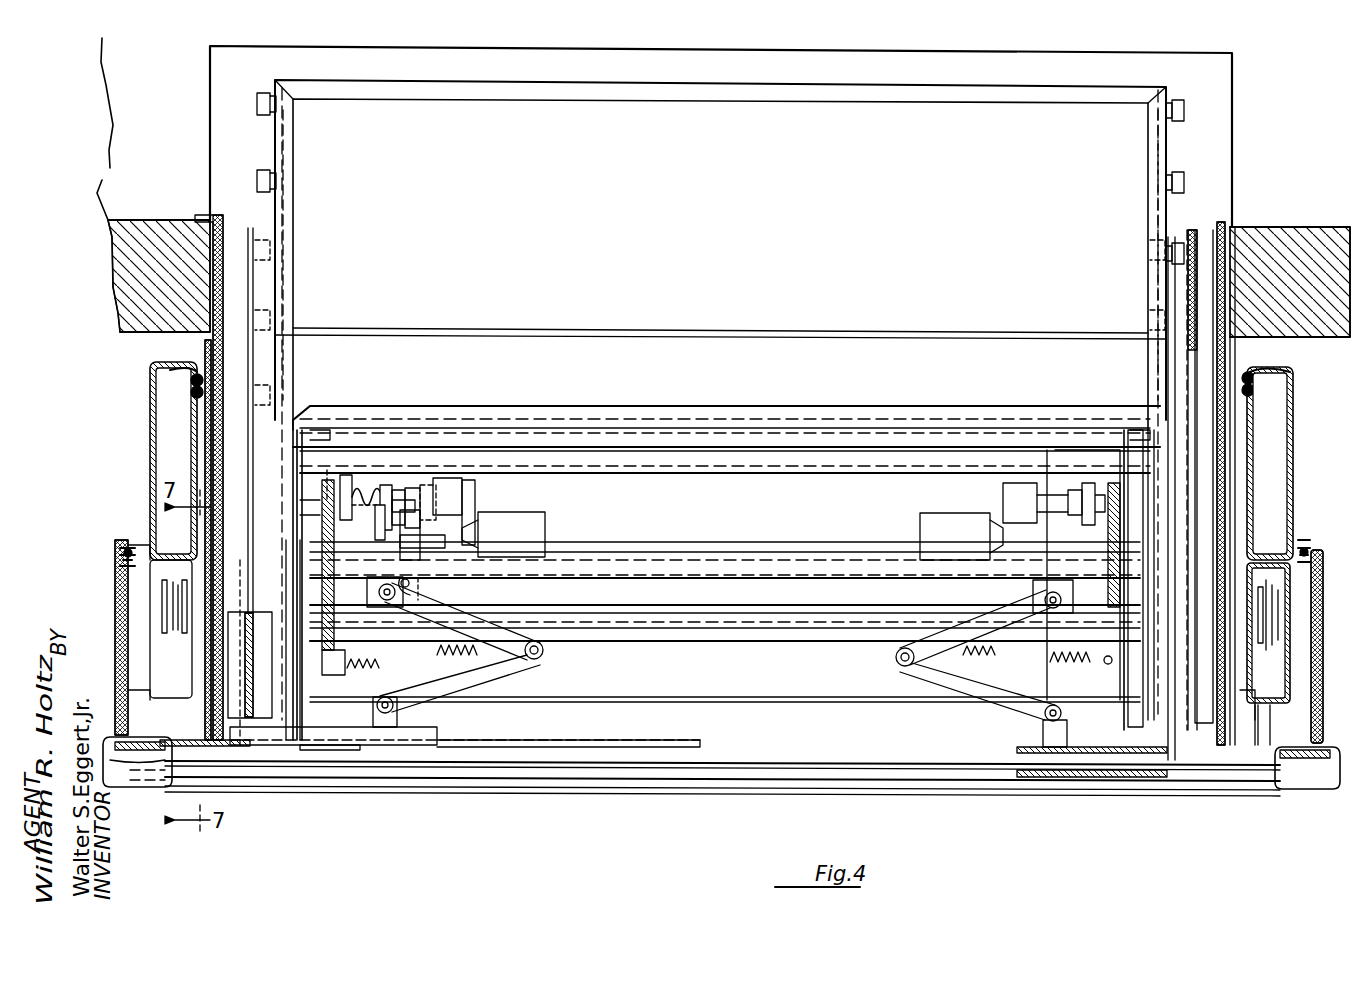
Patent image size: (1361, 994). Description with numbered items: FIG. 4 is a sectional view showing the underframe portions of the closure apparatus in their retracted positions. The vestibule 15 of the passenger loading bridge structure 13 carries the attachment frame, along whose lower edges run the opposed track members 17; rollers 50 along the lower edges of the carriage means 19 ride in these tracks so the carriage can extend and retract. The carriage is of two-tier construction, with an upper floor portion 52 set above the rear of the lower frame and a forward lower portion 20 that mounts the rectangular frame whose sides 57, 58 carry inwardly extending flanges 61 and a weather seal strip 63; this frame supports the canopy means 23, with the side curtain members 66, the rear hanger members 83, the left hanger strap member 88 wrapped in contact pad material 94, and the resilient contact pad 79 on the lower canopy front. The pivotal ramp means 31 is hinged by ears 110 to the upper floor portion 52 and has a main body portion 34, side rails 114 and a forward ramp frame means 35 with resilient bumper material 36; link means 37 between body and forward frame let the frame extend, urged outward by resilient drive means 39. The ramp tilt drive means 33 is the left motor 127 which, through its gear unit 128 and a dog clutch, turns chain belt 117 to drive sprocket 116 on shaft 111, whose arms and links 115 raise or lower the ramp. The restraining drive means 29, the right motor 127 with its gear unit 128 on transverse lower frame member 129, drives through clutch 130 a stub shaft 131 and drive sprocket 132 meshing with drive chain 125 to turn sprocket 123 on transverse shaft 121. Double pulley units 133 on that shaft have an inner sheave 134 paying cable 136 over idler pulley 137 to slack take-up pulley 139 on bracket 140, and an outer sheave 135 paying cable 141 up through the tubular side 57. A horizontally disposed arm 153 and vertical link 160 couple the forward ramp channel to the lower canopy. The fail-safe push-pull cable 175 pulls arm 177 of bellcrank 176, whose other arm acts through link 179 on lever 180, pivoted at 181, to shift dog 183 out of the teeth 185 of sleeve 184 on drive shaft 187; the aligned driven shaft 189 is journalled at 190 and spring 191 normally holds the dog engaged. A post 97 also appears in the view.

The passenger loading bridge structure 13 is at (1320, 230).
The vestibule 15 is at (868, 202).
The track members 17 is at (263, 230).
The carriage means 19 is at (716, 403).
The forward lower portion of the carriage means 20 is at (290, 710).
The canopy means 23 is at (1197, 805).
The motor drive means 29 is at (915, 535).
The ramp means 31 is at (622, 570).
The drive means 33 is at (470, 487).
The main body portion 34 is at (685, 563).
The forward ramp frame means 35 is at (415, 747).
The resilient bumper material 36 is at (925, 767).
The link means 37 is at (522, 657).
The resilient drive means 39 is at (458, 655).
The rollers 50 is at (262, 180).
The upper floor portion 52 is at (287, 300).
The side of frame 57 is at (1293, 410).
The side of frame 58 is at (150, 415).
The flanges 61 is at (175, 368).
The weather seal strip 63 is at (196, 392).
The side curtain members 66 is at (115, 570).
The resilient contact pad 79 is at (470, 782).
The hanger members 83 is at (128, 548).
The hanger strap member 88 is at (130, 768).
The contact pad material 94 is at (130, 790).
The post 97 is at (118, 612).
The ears 110 is at (323, 432).
The shaft 111 is at (660, 642).
The side rails 114 is at (312, 565).
The links 115 is at (340, 746).
The sprocket 116 is at (328, 676).
The chain belt 117 is at (355, 672).
The transverse shaft 121 is at (782, 612).
The sprocket 123 is at (1108, 664).
The drive chain 125 is at (1110, 530).
The motor 127 is at (525, 545).
The gear unit 128 is at (455, 485).
The transverse lower frame member 129 is at (808, 465).
The clutch 130 is at (1072, 492).
The stub shaft 131 is at (1085, 495).
The drive sprocket 132 is at (1118, 490).
The double pulley unit 133 is at (1326, 712).
The inner sheave 134 is at (1262, 590).
The outer sheave 135 is at (1282, 560).
The cable 136 is at (1262, 740).
The idler pulley 137 is at (1272, 595).
The slack take-up pulley 139 is at (1272, 760).
The bracket 140 is at (1262, 745).
The cable 141 is at (1256, 706).
The horizontally disposed arm 153 is at (242, 690).
The vertical link 160 is at (160, 650).
The push-pull cable 175 is at (472, 580).
The bellcrank 176 is at (412, 583).
The arm 177 is at (410, 545).
The link 179 is at (385, 522).
The lever 180 is at (205, 532).
The pivot 181 is at (386, 488).
The dog 183 is at (398, 492).
The sleeve 184 is at (415, 495).
The teeth 185 is at (405, 492).
The drive shaft 187 is at (445, 475).
The driven shaft 189 is at (373, 480).
The journal 190 is at (327, 470).
The spring 191 is at (346, 475).